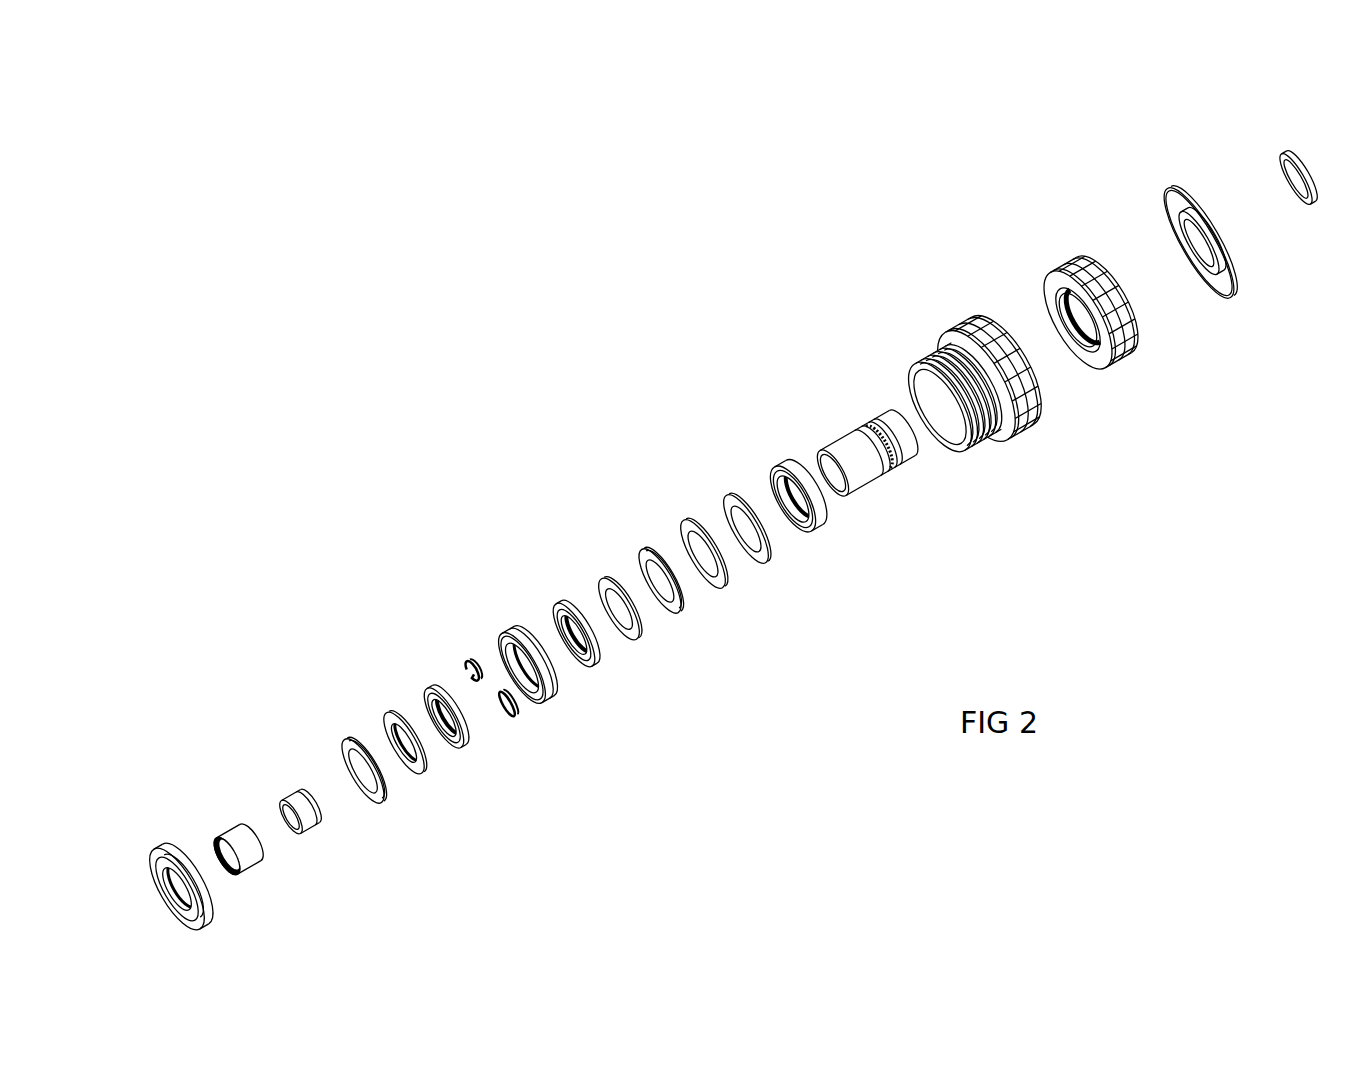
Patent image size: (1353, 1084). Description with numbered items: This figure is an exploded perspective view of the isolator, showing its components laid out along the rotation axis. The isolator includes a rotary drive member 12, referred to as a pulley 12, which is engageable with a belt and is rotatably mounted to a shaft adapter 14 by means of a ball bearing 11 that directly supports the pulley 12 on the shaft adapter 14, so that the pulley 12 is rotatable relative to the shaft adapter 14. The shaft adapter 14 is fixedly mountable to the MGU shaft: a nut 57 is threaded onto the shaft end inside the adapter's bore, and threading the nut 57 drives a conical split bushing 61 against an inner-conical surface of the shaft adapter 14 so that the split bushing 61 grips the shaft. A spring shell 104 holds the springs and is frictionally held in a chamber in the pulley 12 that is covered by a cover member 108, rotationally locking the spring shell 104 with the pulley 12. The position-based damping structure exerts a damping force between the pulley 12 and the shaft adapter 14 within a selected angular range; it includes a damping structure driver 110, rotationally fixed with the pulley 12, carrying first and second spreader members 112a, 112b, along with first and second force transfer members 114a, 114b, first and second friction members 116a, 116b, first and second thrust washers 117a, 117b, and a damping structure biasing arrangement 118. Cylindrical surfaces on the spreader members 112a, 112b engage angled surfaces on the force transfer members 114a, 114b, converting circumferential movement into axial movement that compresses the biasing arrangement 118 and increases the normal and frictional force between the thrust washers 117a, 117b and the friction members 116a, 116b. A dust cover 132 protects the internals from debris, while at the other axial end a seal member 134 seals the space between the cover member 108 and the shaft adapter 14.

The ball bearing 11 is at (780, 463).
The rotary drive member 12 is at (928, 363).
The shaft adapter 14 is at (835, 450).
The nut 57 is at (231, 834).
The conical split bushing 61 is at (292, 800).
The spring shell 104 is at (1057, 268).
The cover member 108 is at (1165, 197).
The damping structure driver 110 is at (508, 630).
The first spreader member 112a is at (468, 660).
The second spreader member 112b is at (509, 718).
The first force transfer member 114a is at (425, 688).
The second force transfer member 114b is at (556, 603).
The first friction member 116a is at (385, 712).
The second friction member 116b is at (600, 578).
The first thrust washer 117a is at (343, 742).
The second thrust washer 117b is at (648, 550).
The damping structure biasing arrangement 118 is at (688, 523).
The dust cover 132 is at (157, 843).
The seal member 134 is at (1283, 162).